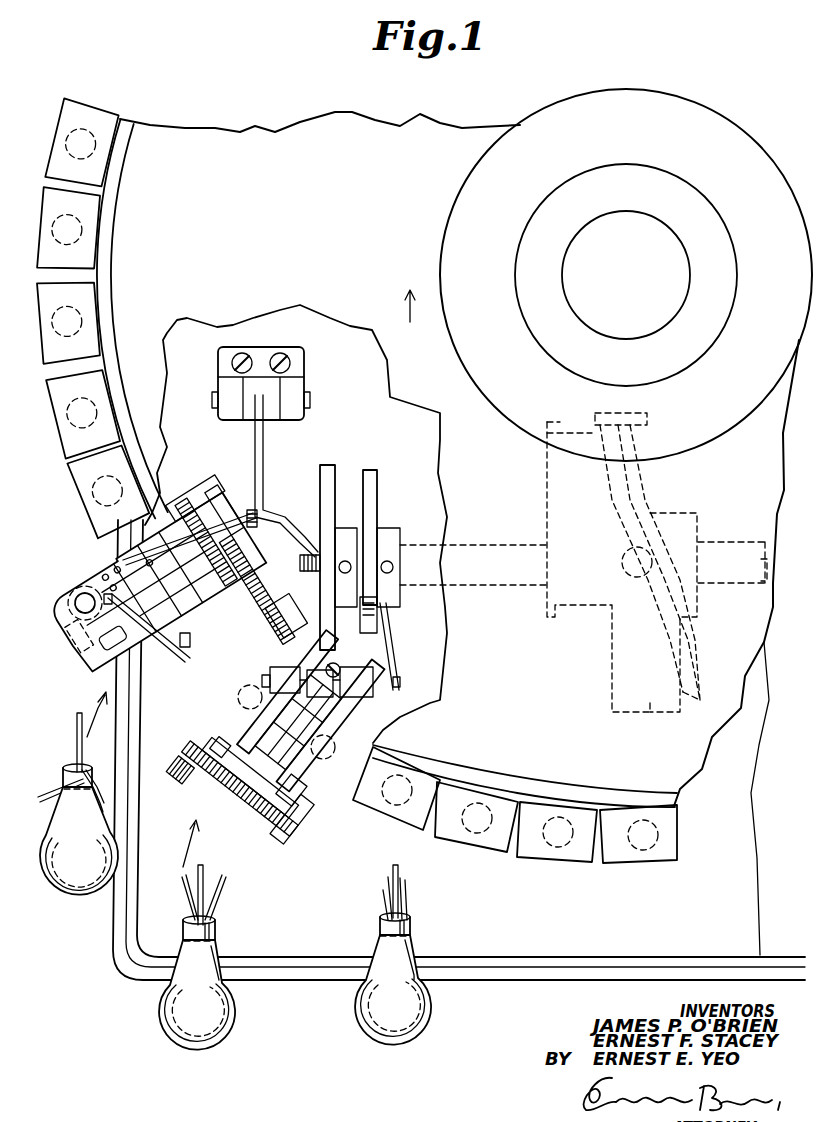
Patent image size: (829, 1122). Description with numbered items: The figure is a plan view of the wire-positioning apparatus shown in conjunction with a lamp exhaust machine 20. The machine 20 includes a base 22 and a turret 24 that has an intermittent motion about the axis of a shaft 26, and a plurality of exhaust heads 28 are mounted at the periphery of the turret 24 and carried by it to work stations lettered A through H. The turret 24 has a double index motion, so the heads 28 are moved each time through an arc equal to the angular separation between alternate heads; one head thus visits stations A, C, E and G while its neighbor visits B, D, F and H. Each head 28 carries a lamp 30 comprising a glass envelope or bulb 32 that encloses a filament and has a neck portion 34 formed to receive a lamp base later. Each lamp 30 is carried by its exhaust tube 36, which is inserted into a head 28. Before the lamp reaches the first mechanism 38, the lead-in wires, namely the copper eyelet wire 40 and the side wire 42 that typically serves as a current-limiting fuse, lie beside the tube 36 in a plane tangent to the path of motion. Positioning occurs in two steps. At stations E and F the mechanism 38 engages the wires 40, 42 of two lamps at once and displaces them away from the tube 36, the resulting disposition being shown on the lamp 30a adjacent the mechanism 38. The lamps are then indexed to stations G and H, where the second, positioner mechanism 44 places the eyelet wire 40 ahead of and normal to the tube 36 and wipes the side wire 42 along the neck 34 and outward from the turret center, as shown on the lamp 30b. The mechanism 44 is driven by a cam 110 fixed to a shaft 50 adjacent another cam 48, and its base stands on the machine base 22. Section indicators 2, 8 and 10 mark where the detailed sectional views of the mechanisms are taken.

The section line 2- 2 is at (427, 667).
The section line 8- 8 is at (422, 527).
The section line 10- 10 is at (10, 640).
The exhaust machine 20 is at (499, 992).
The base 22 is at (668, 925).
The turret 24 is at (633, 754).
The shaft 26 is at (668, 262).
The exhaust heads 28 is at (562, 898).
The lamp 30 is at (251, 890).
The lamp 30a is at (247, 1038).
The lamp 30b is at (80, 916).
The glass envelope or bulb 32 is at (358, 1008).
The neck portion 34 is at (410, 925).
The exhaust tube 36 is at (402, 867).
The first mechanism 38 is at (315, 803).
The eyelet wire 40 is at (390, 895).
The side wire 42 is at (402, 890).
The positioner mechanism 44 is at (246, 641).
The cam 48 is at (371, 470).
The shaft 50 is at (500, 552).
The cam 110 is at (325, 467).